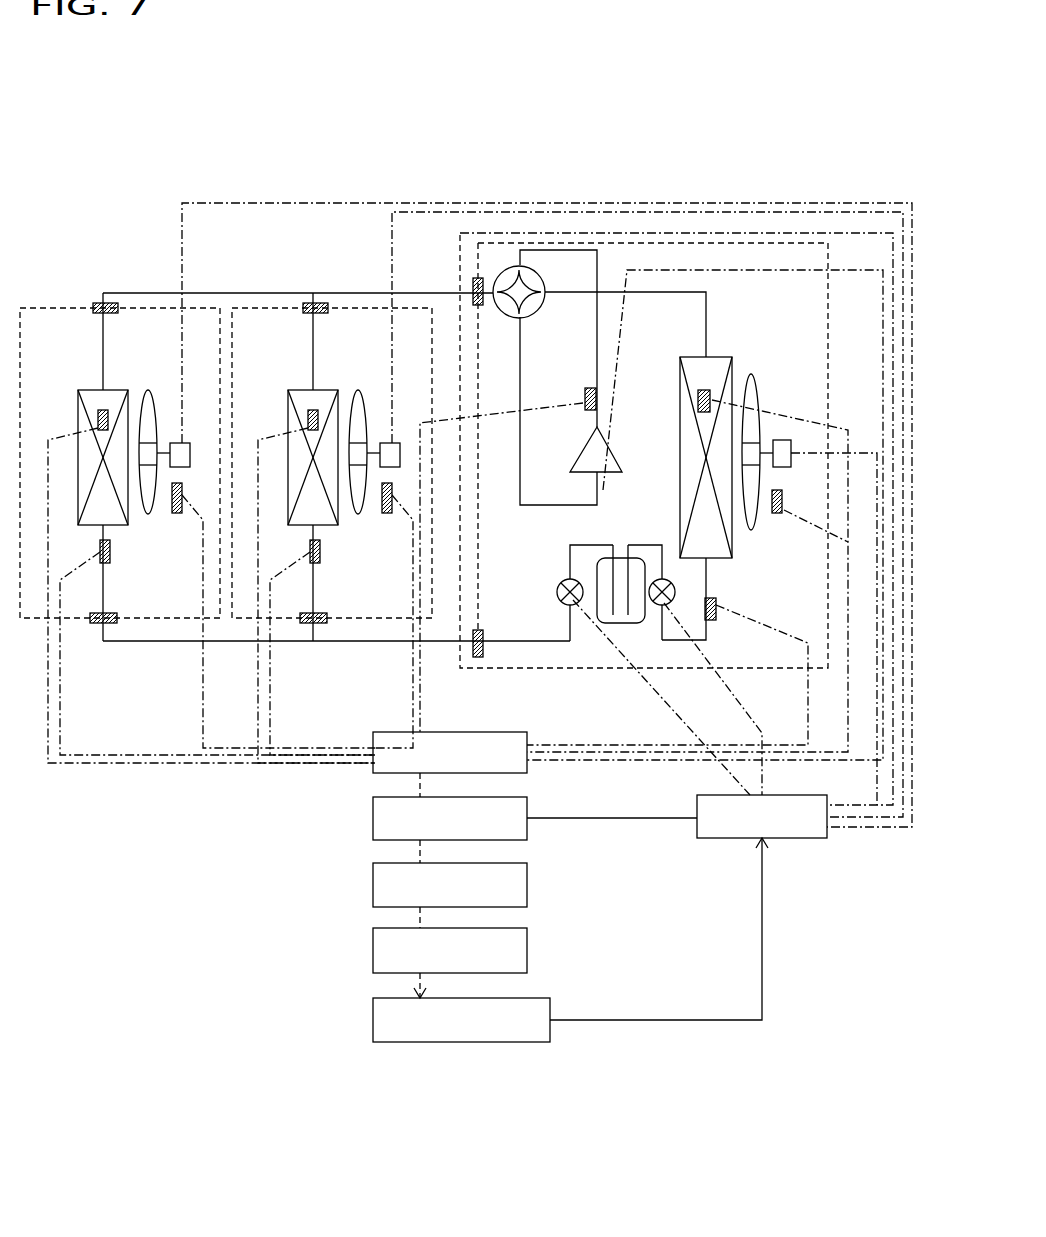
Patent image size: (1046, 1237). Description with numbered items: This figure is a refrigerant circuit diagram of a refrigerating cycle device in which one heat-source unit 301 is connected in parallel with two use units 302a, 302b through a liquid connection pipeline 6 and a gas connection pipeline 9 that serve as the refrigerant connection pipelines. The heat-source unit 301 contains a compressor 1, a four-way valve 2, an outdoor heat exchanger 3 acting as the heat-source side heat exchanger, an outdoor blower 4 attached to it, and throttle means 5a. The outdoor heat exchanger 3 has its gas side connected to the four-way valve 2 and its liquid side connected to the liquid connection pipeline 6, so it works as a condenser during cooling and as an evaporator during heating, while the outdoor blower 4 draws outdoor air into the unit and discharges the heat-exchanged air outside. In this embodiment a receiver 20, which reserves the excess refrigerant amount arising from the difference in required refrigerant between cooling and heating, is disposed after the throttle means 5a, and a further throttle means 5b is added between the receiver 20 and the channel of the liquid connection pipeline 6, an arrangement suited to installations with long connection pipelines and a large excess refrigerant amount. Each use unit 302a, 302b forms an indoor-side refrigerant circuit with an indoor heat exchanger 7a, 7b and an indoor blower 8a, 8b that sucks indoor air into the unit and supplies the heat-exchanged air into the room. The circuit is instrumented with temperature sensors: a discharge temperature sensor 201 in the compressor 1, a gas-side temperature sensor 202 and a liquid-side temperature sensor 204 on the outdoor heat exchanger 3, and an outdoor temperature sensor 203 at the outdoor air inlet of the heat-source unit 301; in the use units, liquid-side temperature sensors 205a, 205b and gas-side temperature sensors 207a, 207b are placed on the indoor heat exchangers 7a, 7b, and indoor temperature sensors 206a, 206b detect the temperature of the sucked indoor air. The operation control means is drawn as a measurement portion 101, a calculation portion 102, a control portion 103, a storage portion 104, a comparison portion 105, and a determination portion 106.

The compressor 1 is at (604, 478).
The four-way valve 2 is at (500, 275).
The outdoor heat exchanger 3 is at (700, 367).
The outdoor blower 4 is at (788, 468).
The throttle means 5a is at (673, 610).
The throttle means 5b is at (578, 607).
The liquid connection pipeline 6 is at (448, 645).
The indoor heat exchanger 7a is at (328, 527).
The indoor heat exchanger 7b is at (118, 527).
The indoor blower 8a is at (392, 440).
The indoor blower 8b is at (182, 440).
The gas connection pipeline 9 is at (460, 290).
The receiver 20 is at (612, 630).
The measurement portion 101 is at (527, 773).
The calculation portion 102 is at (527, 840).
The control portion 103 is at (803, 840).
The storage portion 104 is at (527, 907).
The comparison portion 105 is at (527, 973).
The determination portion 106 is at (527, 1042).
The discharge temperature sensor 201 is at (585, 392).
The gas-side temperature sensor 202 is at (697, 400).
The outdoor temperature sensor 203 is at (783, 515).
The liquid-side temperature sensor 204 is at (718, 622).
The liquid-side temperature sensor 205a is at (320, 565).
The liquid-side temperature sensor 205b is at (110, 565).
The indoor temperature sensor 206a is at (387, 515).
The indoor temperature sensor 206b is at (177, 515).
The gas-side temperature sensor 207a is at (306, 408).
The gas-side temperature sensor 207b is at (96, 408).
The heat-source unit 301 is at (538, 672).
The use unit 302a is at (332, 528).
The use unit 302b is at (197, 528).